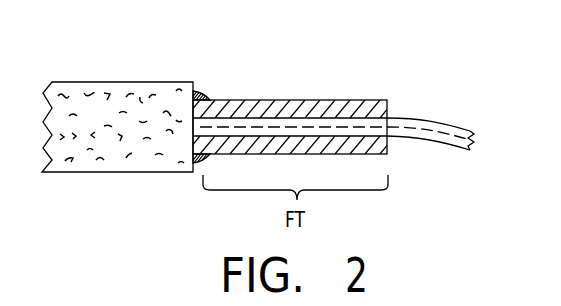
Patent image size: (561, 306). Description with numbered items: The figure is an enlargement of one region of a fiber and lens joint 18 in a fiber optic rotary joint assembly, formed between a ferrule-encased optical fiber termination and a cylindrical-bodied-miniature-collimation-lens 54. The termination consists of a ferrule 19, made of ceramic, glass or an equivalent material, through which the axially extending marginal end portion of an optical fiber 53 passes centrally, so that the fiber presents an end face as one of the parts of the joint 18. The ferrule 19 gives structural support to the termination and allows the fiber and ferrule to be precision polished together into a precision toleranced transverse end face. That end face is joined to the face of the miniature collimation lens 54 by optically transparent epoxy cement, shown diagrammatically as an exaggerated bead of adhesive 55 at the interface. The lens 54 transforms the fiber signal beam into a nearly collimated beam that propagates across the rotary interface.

The cylindrical-bodied-miniature-collimation-lens 54 is at (128, 82).
The bead of adhesive 55 is at (207, 95).
The ferrule 19 is at (303, 100).
The optical fiber 53 is at (423, 118).
The fiber and lens joint 18 is at (193, 152).